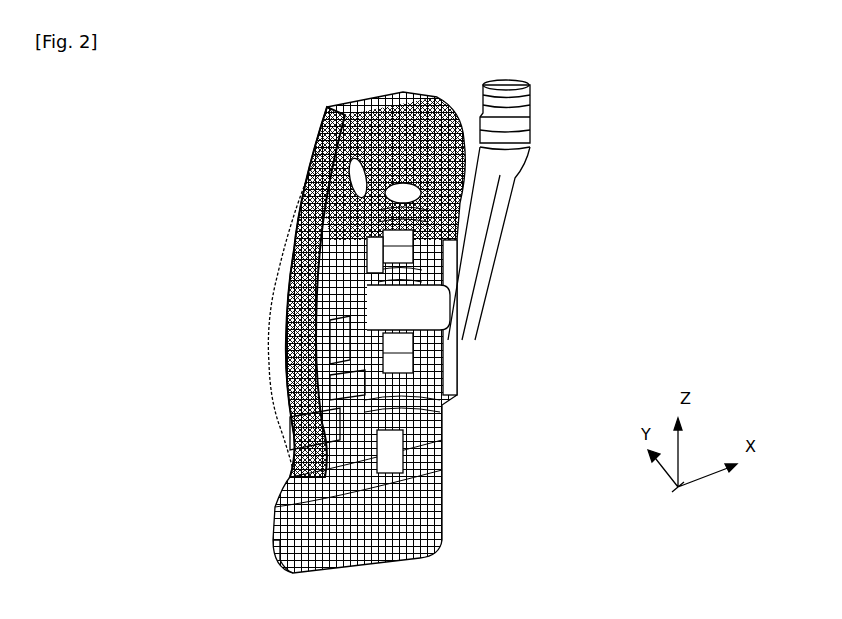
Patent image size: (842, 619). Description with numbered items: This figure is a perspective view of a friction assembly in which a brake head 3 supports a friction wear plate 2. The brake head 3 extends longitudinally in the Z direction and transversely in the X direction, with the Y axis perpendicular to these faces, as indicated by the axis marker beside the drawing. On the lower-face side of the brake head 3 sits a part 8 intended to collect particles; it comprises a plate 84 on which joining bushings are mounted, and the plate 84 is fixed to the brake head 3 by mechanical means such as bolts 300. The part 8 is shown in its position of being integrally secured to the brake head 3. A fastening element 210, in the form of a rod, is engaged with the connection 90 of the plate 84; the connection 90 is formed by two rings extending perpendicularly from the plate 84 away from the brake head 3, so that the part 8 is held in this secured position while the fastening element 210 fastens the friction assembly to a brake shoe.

The friction wear plate 2 is at (276, 278).
The brake head 3 is at (298, 247).
The part 8 is at (365, 384).
The plate 84 is at (288, 335).
The connection 90 is at (370, 328).
The fastening element 210 is at (403, 248).
The bolts 300 is at (290, 417).